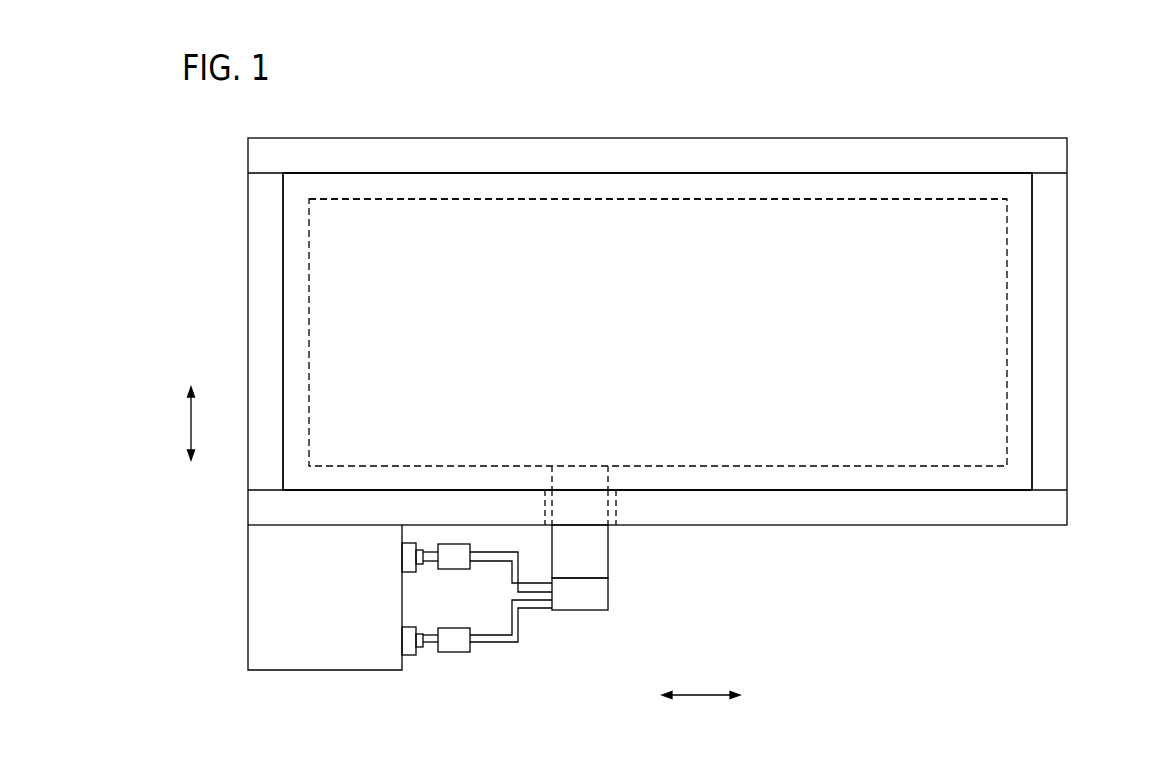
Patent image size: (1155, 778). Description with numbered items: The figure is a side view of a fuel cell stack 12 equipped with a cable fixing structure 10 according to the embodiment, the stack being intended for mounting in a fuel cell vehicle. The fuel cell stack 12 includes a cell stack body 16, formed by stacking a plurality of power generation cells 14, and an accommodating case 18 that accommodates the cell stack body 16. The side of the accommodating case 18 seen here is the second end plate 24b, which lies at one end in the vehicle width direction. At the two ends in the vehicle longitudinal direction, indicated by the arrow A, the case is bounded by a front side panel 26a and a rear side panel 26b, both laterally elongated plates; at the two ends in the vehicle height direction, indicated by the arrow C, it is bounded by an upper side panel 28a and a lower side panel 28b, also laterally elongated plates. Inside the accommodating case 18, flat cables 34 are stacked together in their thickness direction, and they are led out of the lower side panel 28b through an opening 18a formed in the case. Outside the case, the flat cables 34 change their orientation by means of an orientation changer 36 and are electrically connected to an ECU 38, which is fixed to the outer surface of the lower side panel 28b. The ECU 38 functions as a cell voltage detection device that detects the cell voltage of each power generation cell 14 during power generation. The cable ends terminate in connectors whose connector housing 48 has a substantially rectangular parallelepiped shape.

The cable fixing structure 10 is at (471, 583).
The fuel cell stack 12 is at (440, 87).
The power generation cell 14 is at (890, 200).
The cell stack body 16 is at (964, 184).
The accommodating case 18 is at (1080, 128).
The opening 18a is at (613, 518).
The second end plate 24b is at (582, 190).
The front side panel 26a is at (1052, 288).
The rear side panel 26b is at (266, 241).
The upper side panel 28a is at (709, 150).
The lower side panel 28b is at (757, 517).
The flat cable 34 is at (514, 568).
The orientation changer 36 is at (583, 600).
The ECU 38 is at (326, 657).
The connector housing 48 is at (406, 556).
The vehicle longitudinal direction A is at (701, 687).
The vehicle height direction C is at (199, 423).